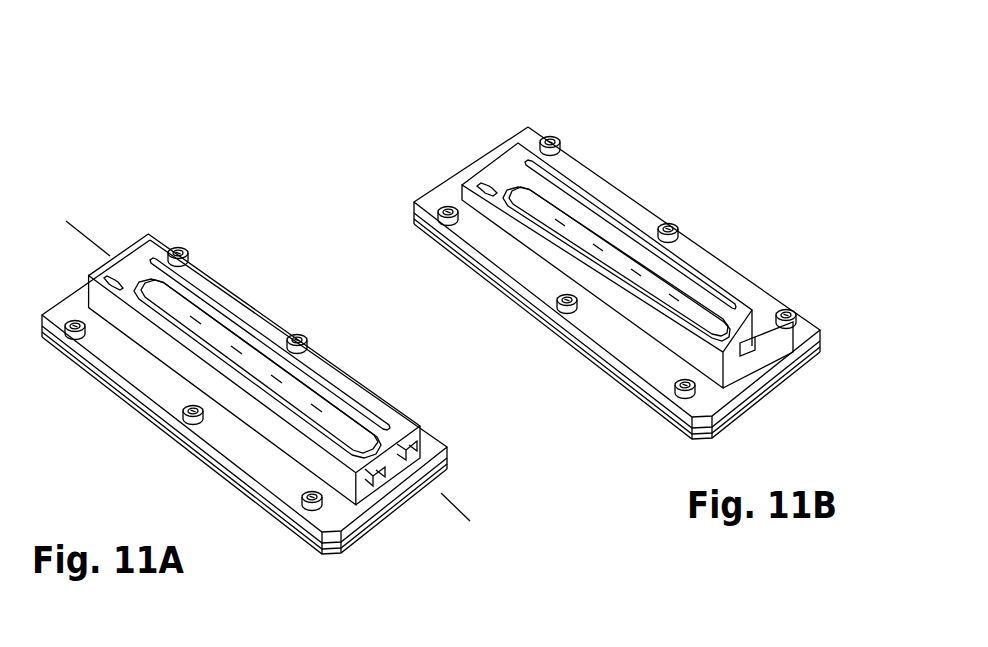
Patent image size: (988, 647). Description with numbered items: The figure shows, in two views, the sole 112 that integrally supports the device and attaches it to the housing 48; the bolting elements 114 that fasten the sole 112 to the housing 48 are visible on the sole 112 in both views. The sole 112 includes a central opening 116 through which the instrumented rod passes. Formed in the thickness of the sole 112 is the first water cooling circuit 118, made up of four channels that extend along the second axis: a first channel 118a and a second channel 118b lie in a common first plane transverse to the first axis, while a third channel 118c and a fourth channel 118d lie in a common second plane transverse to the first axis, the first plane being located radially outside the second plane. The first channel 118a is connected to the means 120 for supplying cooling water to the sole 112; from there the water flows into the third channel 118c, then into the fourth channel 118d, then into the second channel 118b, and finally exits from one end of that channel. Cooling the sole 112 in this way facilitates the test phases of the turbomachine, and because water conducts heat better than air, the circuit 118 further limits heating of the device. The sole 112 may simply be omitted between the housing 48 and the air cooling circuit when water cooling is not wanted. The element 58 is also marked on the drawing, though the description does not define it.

In FIG. 11A, the housing 48 is at (355, 546).
In FIG. 11B, the housing 48 is at (737, 420).
In FIG. 11A, the adjacent structure 58 is at (445, 497).
In FIG. 11A, the sole 112 is at (249, 470).
In FIG. 11B, the sole 112 is at (620, 357).
In FIG. 11A, the bolting elements 114 is at (182, 248).
In FIG. 11B, the bolting elements 114 is at (556, 138).
In FIG. 11A, the central opening 116 is at (205, 318).
In FIG. 11B, the central opening 116 is at (563, 222).
In FIG. 11A, the first water cooling circuit 118 is at (241, 360).
In FIG. 11B, the first water cooling circuit 118 is at (622, 258).
In FIG. 11A, the first channel 118a is at (172, 330).
In FIG. 11A, the second channel 118b is at (337, 395).
In FIG. 11B, the third channel 118c is at (545, 258).
In FIG. 11B, the fourth channel 118d is at (698, 292).
In FIG. 11A, the means for supplying cooling water 120 is at (373, 478).